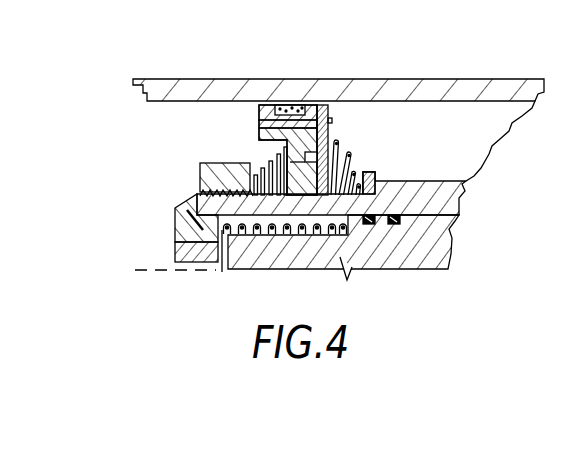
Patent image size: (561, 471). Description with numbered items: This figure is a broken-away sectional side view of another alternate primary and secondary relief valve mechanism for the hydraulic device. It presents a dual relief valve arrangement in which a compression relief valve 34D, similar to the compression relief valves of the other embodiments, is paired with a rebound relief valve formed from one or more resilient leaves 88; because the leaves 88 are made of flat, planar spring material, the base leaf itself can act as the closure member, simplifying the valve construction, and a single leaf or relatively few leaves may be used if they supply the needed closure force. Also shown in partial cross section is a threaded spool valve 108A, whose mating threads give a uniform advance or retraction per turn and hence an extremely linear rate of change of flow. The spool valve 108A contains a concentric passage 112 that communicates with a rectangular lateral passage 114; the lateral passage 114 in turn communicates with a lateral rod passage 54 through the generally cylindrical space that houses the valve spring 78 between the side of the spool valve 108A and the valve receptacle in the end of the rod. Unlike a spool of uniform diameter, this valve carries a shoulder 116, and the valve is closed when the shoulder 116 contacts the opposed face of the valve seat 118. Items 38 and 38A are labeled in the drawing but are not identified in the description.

The compression relief valve 34D is at (335, 136).
The rotor hub 38 is at (259, 140).
The brush bristles 38A is at (340, 153).
The lateral rod passage 54 is at (312, 213).
The valve spring 78 is at (297, 217).
The resilient leaves 88 is at (268, 170).
The spool valve 108A is at (400, 270).
The concentric passage 112 is at (176, 262).
The rectangular lateral passage 114 is at (222, 272).
The shoulder 116 is at (186, 210).
The valve seat 118 is at (183, 195).